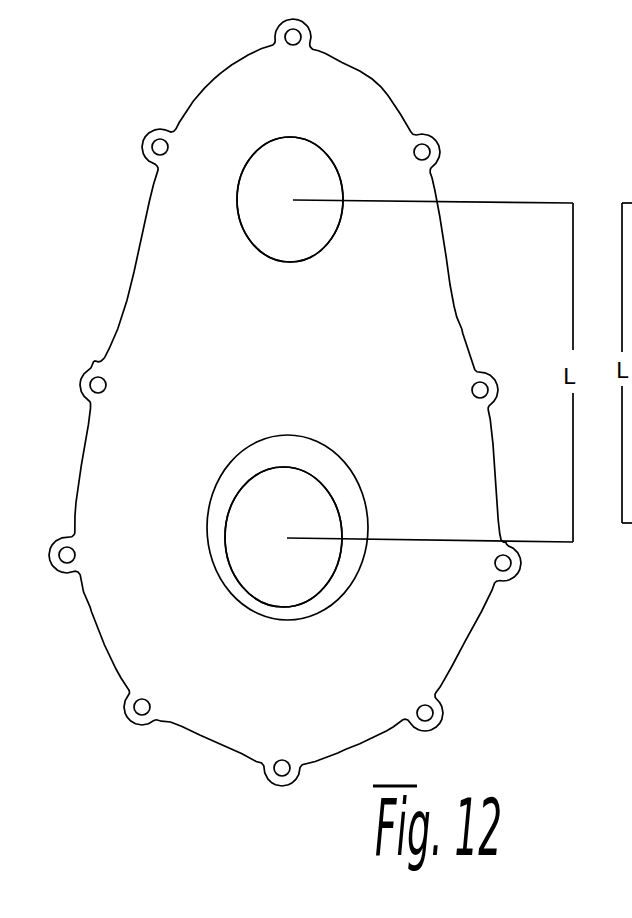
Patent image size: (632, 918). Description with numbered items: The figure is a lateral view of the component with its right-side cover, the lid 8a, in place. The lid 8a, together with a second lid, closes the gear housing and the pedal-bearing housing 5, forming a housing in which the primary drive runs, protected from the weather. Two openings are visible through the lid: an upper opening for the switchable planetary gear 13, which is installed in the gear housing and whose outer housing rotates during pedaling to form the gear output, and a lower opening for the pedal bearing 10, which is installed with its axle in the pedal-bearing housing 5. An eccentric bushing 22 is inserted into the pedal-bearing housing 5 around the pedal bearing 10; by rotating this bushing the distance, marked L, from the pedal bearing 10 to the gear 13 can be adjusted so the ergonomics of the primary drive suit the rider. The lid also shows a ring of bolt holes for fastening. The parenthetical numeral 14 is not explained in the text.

The lid 8a is at (306, 368).
The switchable planetary gear 13 is at (293, 174).
The opening 14 is at (322, 171).
The pedal-bearing housing 5 is at (342, 460).
The eccentric bushing 22 is at (225, 493).
The pedal bearing 10 is at (281, 574).